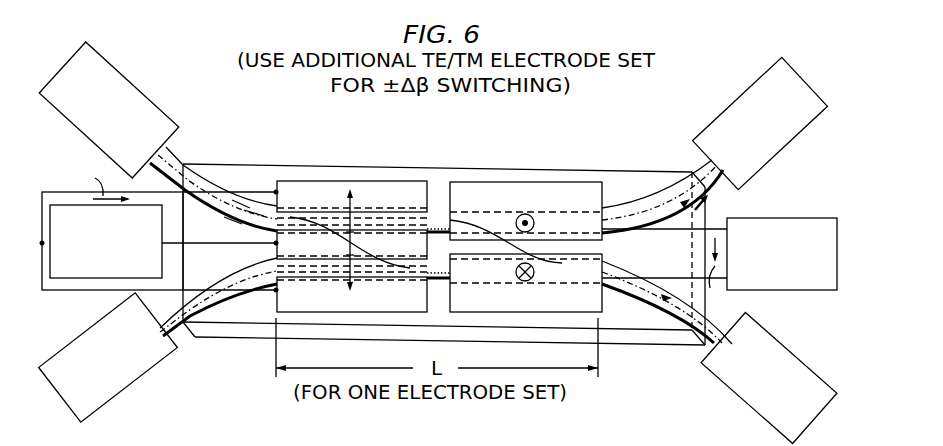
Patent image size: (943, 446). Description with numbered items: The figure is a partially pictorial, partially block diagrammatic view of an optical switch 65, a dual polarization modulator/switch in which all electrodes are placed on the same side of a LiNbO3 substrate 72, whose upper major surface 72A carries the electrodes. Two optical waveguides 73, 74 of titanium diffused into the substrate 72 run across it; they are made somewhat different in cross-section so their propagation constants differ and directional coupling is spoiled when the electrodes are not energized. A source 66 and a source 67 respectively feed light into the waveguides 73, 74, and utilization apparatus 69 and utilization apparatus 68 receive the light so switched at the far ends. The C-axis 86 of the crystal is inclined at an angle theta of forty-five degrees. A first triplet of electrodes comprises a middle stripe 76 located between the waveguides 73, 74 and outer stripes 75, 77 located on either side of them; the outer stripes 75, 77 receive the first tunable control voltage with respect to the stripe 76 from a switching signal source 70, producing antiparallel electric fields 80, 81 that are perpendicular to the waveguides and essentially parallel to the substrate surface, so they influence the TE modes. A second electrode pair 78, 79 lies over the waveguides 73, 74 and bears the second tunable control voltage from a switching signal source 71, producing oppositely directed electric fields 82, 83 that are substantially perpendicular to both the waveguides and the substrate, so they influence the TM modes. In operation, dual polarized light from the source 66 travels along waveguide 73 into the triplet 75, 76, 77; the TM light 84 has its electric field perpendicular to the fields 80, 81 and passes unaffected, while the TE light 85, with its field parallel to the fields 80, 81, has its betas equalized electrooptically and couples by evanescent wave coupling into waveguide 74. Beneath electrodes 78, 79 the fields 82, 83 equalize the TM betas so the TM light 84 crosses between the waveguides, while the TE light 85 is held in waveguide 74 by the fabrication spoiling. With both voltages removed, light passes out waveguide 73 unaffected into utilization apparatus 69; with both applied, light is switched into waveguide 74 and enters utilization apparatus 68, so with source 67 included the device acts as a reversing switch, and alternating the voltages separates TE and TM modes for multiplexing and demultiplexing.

The optical switch 65 is at (385, 127).
The source 66 is at (134, 84).
The source 67 is at (133, 385).
The utilization apparatus 68 is at (745, 404).
The utilization apparatus 69 is at (736, 99).
The switching signal source 70 is at (72, 291).
The switching signal source 71 is at (790, 291).
The substrate 72 is at (617, 339).
The substrate top surface 72A is at (640, 324).
The waveguide 73 is at (175, 160).
The waveguide 74 is at (193, 300).
The outer stripe 75 is at (287, 180).
The middle stripe 76 is at (246, 232).
The outer stripe 77 is at (276, 300).
The electrode 78 is at (603, 187).
The electrode 79 is at (603, 304).
The electric field 80 is at (354, 198).
The electric field 81 is at (355, 290).
The electric field 82 is at (523, 212).
The electric field 83 is at (522, 283).
The TM light component 84 is at (438, 222).
The TE light 85 is at (438, 268).
The C-axis 86 is at (708, 204).